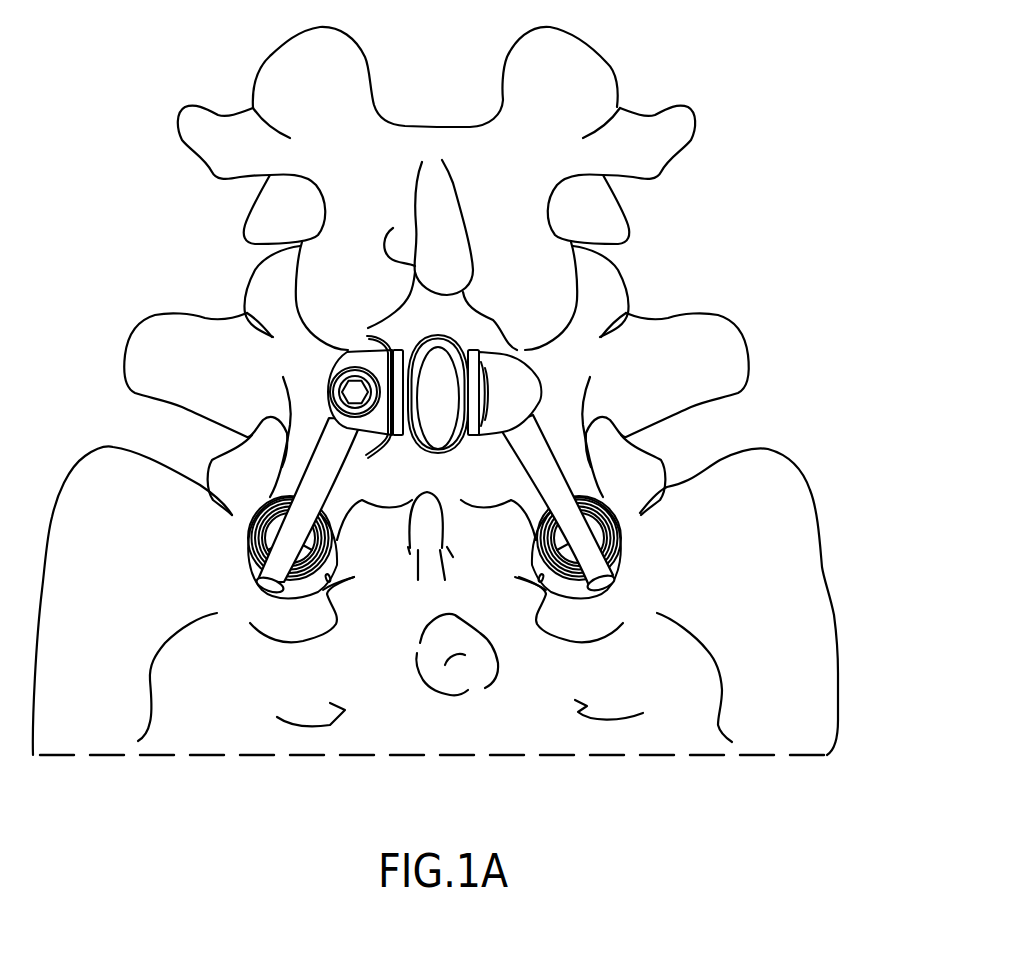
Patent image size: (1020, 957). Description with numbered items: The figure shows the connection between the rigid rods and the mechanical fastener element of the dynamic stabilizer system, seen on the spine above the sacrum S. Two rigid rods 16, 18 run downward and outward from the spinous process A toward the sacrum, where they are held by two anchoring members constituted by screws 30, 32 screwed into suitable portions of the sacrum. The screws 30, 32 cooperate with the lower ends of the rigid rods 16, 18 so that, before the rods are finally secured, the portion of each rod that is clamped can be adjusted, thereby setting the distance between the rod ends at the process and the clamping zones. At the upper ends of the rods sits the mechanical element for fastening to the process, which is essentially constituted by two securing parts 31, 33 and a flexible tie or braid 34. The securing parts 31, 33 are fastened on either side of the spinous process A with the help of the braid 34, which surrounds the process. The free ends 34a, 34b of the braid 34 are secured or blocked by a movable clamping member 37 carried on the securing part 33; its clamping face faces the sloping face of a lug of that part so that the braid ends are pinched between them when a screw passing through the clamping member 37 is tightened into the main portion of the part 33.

The rigid rod 16 is at (550, 462).
The rigid rod 18 is at (325, 462).
The screw 30 is at (243, 548).
The securing part 31 is at (530, 384).
The screw 32 is at (630, 548).
The securing part 33 is at (405, 352).
The flexible tie or braid 34 is at (445, 455).
The free end of the braid 34a is at (384, 338).
The free end of the braid 34b is at (372, 456).
The clamping member 37 is at (333, 378).
The spinous process A is at (444, 402).
The sacrum S is at (531, 737).